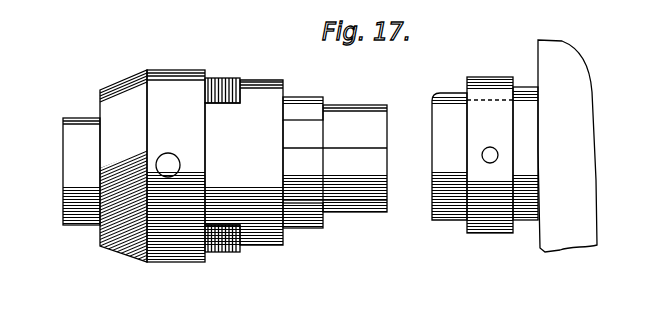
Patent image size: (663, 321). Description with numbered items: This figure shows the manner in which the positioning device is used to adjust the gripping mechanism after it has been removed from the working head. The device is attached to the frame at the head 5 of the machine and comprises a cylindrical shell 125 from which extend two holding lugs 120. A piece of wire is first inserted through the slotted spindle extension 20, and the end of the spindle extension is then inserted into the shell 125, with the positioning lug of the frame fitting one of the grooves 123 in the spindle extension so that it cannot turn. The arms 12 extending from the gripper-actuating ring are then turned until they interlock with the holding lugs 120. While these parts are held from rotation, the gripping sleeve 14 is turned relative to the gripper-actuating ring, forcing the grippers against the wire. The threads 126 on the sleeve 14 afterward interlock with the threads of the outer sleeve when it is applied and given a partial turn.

The head 5 is at (578, 68).
The arms 12 is at (315, 97).
The gripping sleeve 14 is at (193, 250).
The spindle extension 20 is at (80, 118).
The holding lugs 120 is at (424, 133).
The groove 123 is at (372, 162).
The cylindrical shell 125 is at (530, 87).
The threads 126 is at (227, 254).